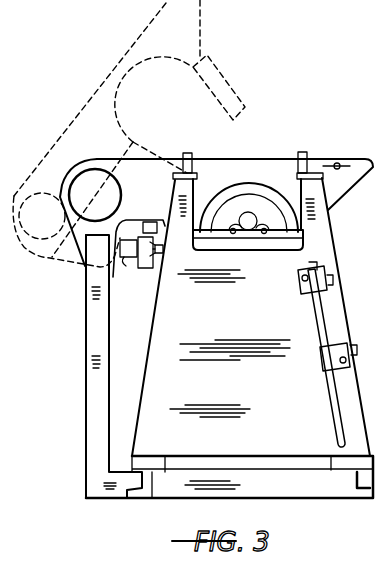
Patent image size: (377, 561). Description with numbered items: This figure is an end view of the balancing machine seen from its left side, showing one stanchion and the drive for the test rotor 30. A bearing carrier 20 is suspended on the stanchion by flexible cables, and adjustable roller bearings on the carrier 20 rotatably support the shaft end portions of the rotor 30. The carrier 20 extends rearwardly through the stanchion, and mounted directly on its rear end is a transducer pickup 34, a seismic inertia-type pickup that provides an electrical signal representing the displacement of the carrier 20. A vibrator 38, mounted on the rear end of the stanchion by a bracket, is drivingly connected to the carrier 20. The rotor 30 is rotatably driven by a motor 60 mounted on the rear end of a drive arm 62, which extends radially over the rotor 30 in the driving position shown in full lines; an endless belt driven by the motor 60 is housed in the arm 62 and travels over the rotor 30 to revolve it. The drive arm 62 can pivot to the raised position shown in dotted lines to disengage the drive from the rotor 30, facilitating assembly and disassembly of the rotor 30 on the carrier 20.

The bearing carrier 20 is at (300, 233).
The test rotor 30 is at (241, 197).
The transducer pickup 34 is at (134, 230).
The vibrator 38 is at (125, 258).
The motor 60 is at (83, 183).
The drive arm 62 is at (268, 163).